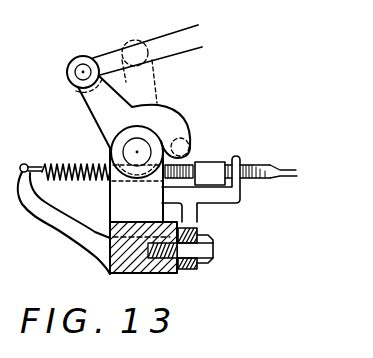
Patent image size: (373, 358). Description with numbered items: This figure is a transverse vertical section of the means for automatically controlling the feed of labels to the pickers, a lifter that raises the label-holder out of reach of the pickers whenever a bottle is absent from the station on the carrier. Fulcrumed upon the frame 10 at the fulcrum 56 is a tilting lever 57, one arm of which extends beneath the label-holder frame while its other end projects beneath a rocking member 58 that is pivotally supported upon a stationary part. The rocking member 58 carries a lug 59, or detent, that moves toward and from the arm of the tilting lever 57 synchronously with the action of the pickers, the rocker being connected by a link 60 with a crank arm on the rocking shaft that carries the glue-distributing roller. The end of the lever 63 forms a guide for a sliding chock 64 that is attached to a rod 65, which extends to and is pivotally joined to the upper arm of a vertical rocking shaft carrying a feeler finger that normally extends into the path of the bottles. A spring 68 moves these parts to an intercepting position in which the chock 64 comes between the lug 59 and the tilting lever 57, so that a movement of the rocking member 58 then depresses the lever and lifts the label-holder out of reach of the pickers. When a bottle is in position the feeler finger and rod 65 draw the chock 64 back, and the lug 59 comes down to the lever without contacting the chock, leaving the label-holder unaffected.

The frame 10 is at (120, 250).
The fulcrum 56 is at (214, 252).
The tilting lever 57 is at (188, 271).
The rocking member 58 is at (105, 110).
The lug 59 is at (186, 143).
The link 60 is at (159, 44).
The lever 63 is at (223, 195).
The sliding chock 64 is at (210, 168).
The rod 65 is at (286, 180).
The spring 68 is at (62, 166).